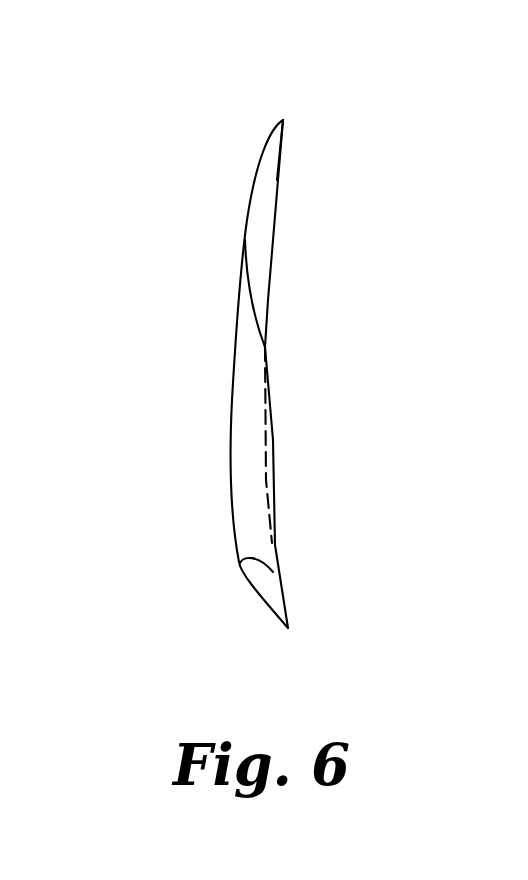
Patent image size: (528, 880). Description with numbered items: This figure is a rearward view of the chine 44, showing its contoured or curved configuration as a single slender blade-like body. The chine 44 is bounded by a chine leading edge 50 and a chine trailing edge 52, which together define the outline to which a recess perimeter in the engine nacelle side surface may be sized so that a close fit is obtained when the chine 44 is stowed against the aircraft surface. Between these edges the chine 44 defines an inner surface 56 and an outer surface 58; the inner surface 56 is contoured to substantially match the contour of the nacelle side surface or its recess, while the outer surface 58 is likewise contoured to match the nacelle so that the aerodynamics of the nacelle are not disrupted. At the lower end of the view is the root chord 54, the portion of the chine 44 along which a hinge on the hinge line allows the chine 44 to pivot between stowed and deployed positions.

The chine 44 is at (314, 343).
The chine leading edge 50 is at (272, 435).
The chine trailing edge 52 is at (272, 260).
The root chord 54 is at (262, 582).
The inner surface 56 is at (265, 207).
The outer surface 58 is at (242, 330).